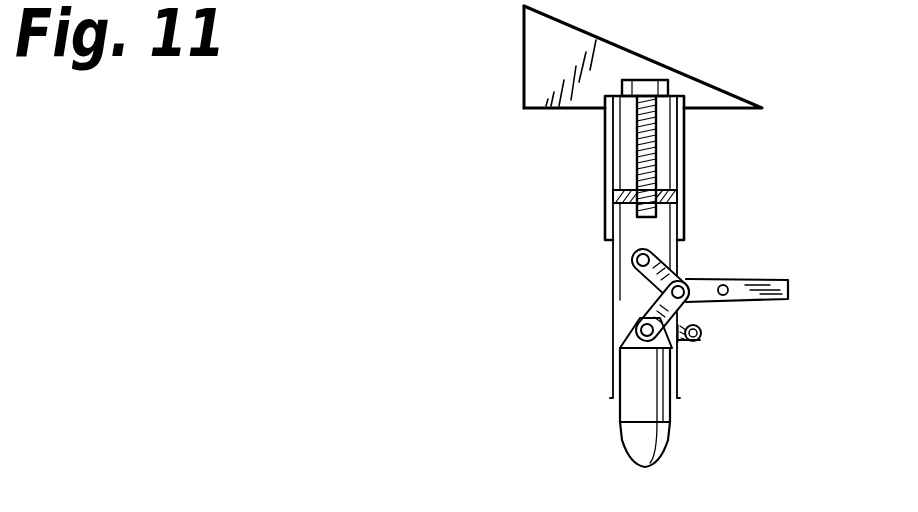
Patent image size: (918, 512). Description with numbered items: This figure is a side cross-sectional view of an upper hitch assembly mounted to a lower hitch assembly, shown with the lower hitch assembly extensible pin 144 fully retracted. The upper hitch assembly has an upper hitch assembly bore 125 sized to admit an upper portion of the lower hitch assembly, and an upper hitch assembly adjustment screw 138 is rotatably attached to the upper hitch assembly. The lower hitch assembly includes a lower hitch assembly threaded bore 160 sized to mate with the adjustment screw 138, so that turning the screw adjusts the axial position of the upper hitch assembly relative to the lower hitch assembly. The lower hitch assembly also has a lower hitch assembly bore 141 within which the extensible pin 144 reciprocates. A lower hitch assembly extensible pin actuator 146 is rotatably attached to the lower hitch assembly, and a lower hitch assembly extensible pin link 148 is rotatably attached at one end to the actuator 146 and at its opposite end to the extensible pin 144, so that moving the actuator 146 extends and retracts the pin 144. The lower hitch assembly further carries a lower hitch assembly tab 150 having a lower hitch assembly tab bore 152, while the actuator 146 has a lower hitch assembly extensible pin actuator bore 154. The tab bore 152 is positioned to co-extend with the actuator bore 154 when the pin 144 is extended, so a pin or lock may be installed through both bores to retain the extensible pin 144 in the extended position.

The upper hitch assembly bore 125 is at (621, 130).
The upper hitch assembly adjustment screw 138 is at (658, 128).
The lower hitch assembly threaded bore 160 is at (612, 196).
The lower hitch assembly bore 141 is at (637, 288).
The lower hitch assembly extensible pin link 148 is at (640, 316).
The lower hitch assembly tab bore 152 is at (700, 345).
The lower hitch assembly tab 150 is at (701, 332).
The lower hitch assembly extensible pin actuator 146 is at (790, 283).
The lower hitch assembly extensible pin actuator bore 154 is at (724, 286).
The lower hitch assembly extensible pin 144 is at (645, 415).